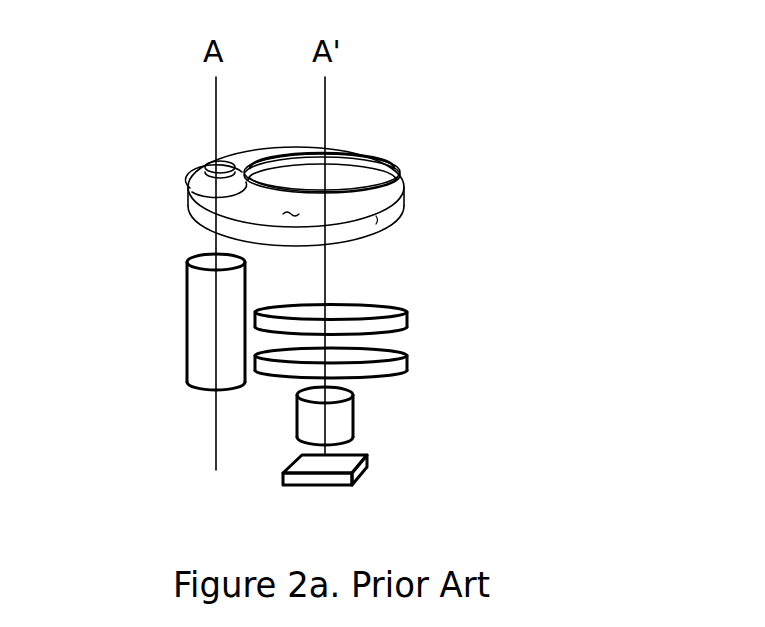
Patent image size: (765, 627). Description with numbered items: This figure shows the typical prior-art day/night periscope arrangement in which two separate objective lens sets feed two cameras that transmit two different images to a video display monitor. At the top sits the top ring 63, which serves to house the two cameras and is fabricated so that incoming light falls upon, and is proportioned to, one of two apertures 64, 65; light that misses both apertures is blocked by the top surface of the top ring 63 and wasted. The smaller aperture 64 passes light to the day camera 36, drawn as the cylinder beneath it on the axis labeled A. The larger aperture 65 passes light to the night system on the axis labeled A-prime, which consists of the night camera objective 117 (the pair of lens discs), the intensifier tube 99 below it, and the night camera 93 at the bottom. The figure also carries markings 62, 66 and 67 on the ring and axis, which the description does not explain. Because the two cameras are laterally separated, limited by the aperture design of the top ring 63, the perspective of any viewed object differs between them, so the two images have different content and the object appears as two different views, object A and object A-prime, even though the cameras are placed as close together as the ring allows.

The day camera 36 is at (187, 293).
The optical axis 62 is at (327, 247).
The top ring 63 is at (403, 195).
The aperture 64 is at (217, 186).
The aperture 65 is at (333, 186).
The small aperture 66 is at (242, 185).
The filter 67 is at (307, 167).
The night camera 93 is at (367, 470).
The intensifier tube 99 is at (355, 415).
The night camera objective 117 is at (418, 294).